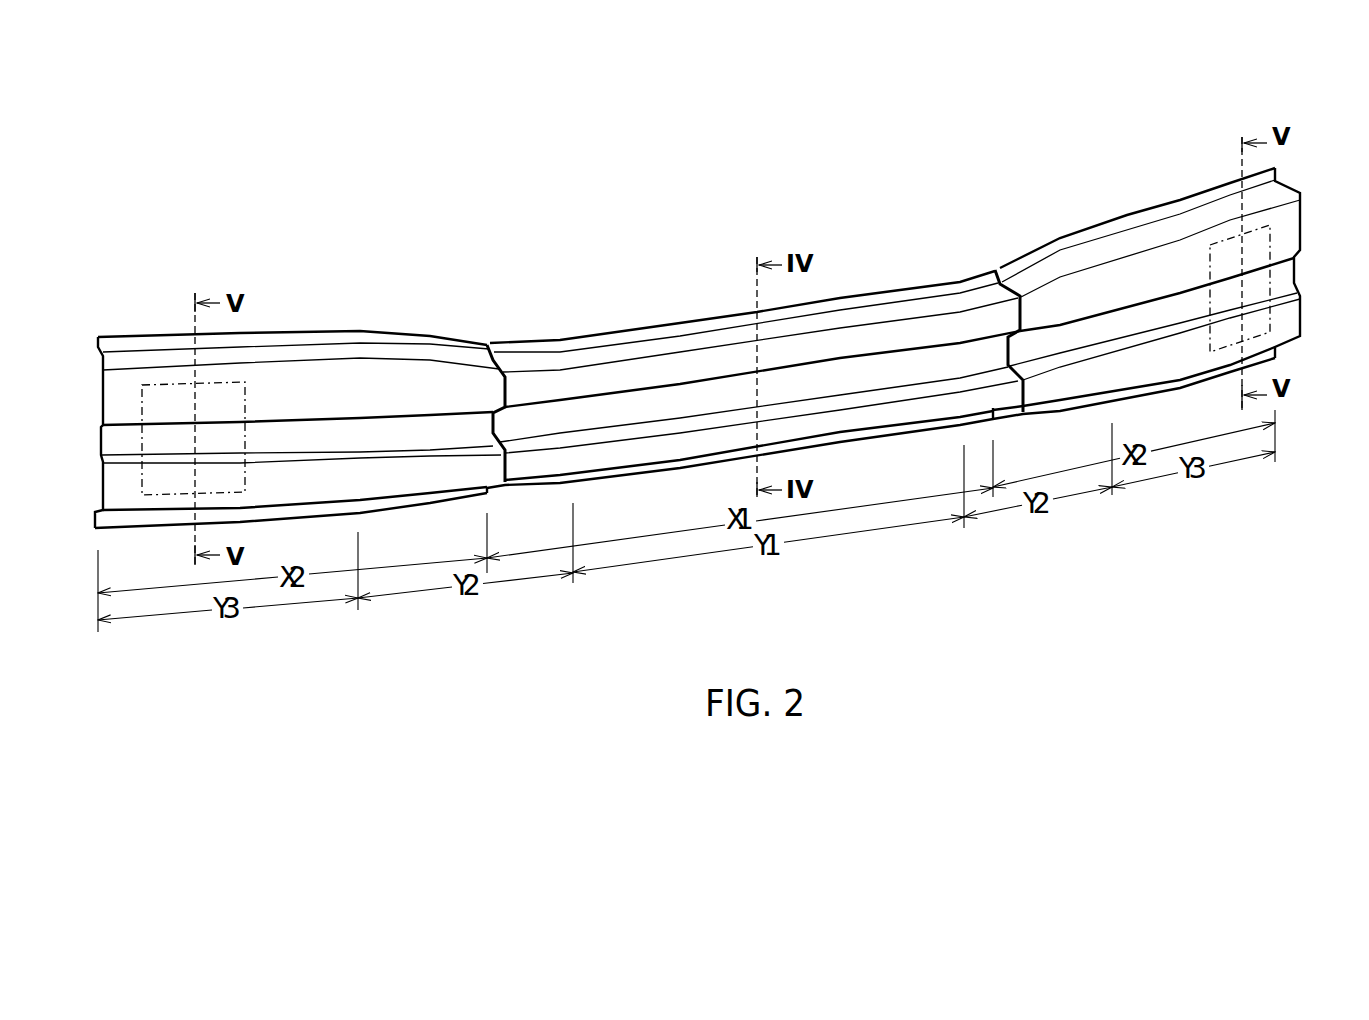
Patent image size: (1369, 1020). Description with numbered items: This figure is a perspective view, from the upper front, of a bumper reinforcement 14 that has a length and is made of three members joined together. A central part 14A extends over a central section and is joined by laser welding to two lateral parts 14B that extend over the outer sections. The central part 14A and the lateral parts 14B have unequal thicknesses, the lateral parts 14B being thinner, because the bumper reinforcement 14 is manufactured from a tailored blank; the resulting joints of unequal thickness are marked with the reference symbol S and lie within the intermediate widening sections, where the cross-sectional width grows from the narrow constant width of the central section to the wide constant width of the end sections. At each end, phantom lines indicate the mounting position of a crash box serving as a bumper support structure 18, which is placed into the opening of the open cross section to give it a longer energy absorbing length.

The bumper reinforcement 14 is at (697, 321).
The central part 14A is at (622, 337).
The lateral part 14B is at (354, 346).
The bumper support structure 18 is at (142, 413).
The unequal thickness joint S is at (494, 348).